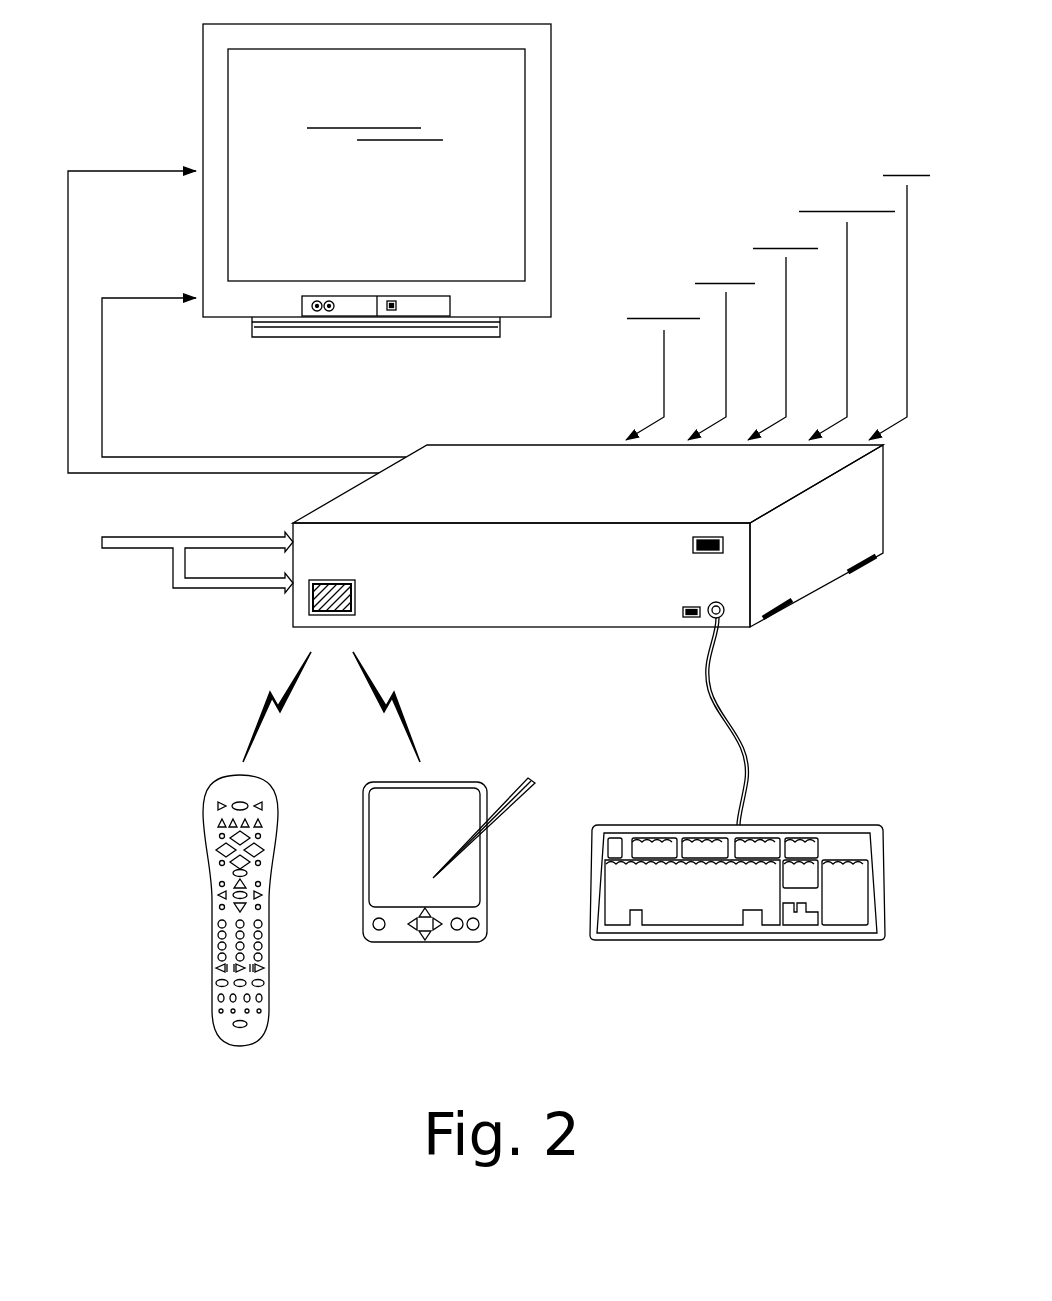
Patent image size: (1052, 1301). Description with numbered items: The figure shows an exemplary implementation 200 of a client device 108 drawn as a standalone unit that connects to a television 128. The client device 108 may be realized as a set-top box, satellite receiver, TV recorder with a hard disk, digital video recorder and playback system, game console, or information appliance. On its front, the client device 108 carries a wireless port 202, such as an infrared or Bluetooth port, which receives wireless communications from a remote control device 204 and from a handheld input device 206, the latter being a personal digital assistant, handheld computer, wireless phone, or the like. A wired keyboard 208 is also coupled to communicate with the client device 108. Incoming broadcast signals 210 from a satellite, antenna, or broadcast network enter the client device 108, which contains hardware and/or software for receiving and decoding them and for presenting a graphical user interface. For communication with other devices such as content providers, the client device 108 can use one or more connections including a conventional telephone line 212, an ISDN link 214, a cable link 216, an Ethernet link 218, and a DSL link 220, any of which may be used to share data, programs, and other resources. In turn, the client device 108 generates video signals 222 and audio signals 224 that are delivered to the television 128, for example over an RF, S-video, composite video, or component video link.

The exemplary implementation 200 is at (676, 50).
The client device 108 is at (493, 445).
The television 128 is at (498, 270).
The wireless port 202 is at (347, 580).
The remote control device 204 is at (203, 802).
The handheld input device 206 is at (443, 782).
The wired keyboard 208 is at (785, 825).
The broadcast signals 210 is at (160, 545).
The conventional telephone line 212 is at (665, 283).
The ISDN link 214 is at (727, 243).
The cable link 216 is at (787, 210).
The Ethernet link 218 is at (847, 172).
The DSL link 220 is at (908, 135).
The video signals 222 is at (163, 206).
The audio signals 224 is at (163, 334).